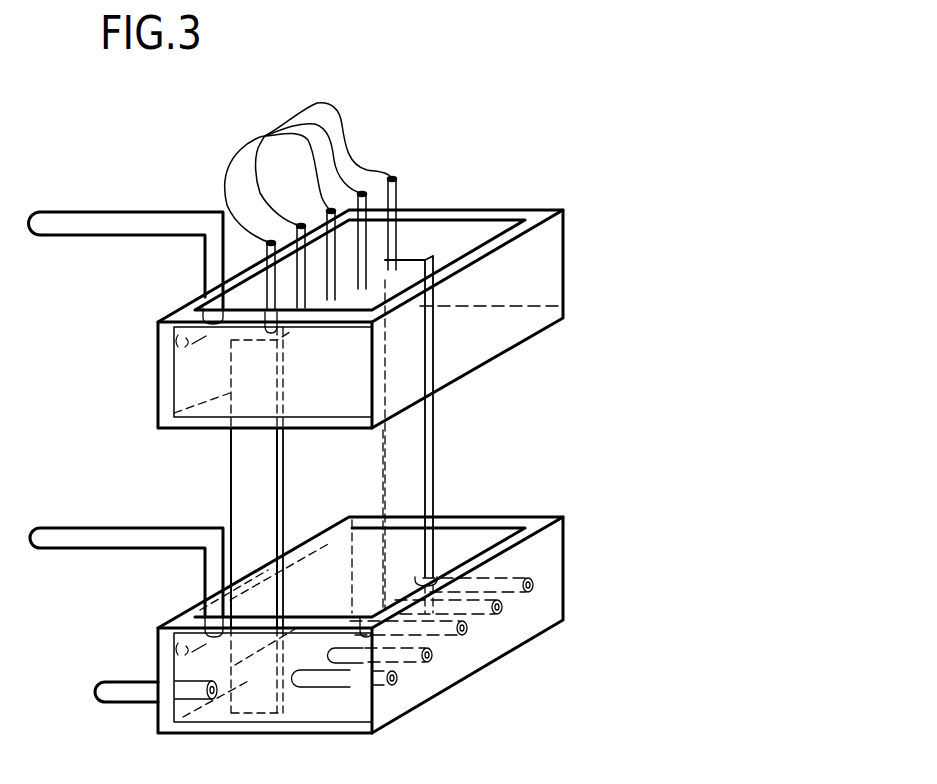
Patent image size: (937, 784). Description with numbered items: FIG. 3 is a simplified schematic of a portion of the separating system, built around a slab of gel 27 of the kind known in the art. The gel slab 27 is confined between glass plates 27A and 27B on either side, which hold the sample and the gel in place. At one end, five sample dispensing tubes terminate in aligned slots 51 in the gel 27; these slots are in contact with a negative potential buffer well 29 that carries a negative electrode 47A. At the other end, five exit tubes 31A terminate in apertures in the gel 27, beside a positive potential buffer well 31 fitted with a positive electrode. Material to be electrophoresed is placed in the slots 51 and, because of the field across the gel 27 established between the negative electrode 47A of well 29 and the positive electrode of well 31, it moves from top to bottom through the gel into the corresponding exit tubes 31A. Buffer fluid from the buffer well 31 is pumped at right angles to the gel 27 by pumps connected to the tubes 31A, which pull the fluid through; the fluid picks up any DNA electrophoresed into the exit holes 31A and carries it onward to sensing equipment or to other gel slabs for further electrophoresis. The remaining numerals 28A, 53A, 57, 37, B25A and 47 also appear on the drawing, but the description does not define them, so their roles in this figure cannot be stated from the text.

The slab of gel 27 is at (242, 473).
The glass plate 27A is at (230, 513).
The glass plate 27B is at (415, 462).
The lead wires 28A is at (265, 136).
The negative potential buffer well 29 is at (547, 272).
The positive potential buffer well 31 is at (547, 562).
The exit tubes 31A is at (392, 685).
The negative electrode 47A is at (130, 211).
The lead 53A is at (130, 528).
The pin 57 is at (128, 679).
The aligned slots 51 is at (297, 357).
The element 37 is at (576, 783).
The element B25A is at (623, 783).
The lead 47 is at (680, 783).